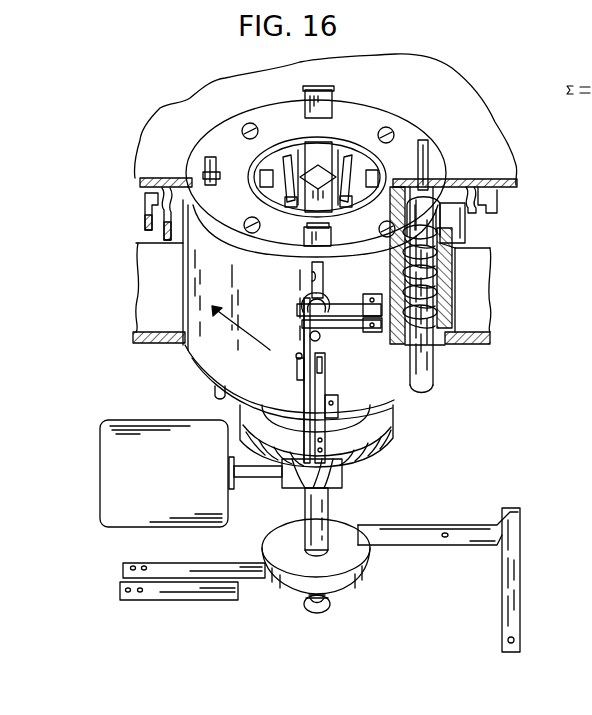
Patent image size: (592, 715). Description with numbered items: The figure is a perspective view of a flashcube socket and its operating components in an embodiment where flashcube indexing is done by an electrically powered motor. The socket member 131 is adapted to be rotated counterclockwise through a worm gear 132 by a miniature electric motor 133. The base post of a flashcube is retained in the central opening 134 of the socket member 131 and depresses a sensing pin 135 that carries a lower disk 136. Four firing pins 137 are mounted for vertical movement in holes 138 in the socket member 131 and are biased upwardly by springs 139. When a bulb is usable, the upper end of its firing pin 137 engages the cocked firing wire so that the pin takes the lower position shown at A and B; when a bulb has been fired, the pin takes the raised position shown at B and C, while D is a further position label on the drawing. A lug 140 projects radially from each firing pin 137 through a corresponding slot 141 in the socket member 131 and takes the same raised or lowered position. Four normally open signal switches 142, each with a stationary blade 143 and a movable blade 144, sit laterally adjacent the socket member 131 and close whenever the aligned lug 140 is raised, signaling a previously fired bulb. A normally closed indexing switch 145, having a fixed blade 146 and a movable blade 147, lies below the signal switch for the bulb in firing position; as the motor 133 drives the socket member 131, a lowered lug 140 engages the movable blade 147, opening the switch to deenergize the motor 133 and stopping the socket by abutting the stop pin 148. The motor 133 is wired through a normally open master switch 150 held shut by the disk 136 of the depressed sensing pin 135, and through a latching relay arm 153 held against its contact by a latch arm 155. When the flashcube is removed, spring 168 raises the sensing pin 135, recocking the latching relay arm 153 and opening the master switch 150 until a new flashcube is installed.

The central opening 134 is at (348, 140).
The socket member 131 is at (203, 347).
The raised firing pin position C is at (332, 94).
The lowered firing pin position A is at (331, 238).
The firing pin position B is at (216, 164).
The pin D is at (426, 157).
The firing pin 137 is at (432, 361).
The spring 139 is at (447, 270).
The hole 138 is at (448, 302).
The lug 140 is at (458, 216).
The slot 141 is at (450, 238).
The movable blade 144 is at (172, 178).
The stationary blade 143 is at (147, 199).
The signal switch 142 is at (143, 209).
The movable blade 147 is at (304, 344).
The stop pin 148 is at (297, 369).
The fixed blade 146 is at (327, 366).
The indexing switch 145 is at (303, 391).
The worm gear 132 is at (343, 474).
The sensing pin 135 is at (322, 513).
The lower disk 136 is at (347, 583).
The spring 168 is at (308, 612).
The miniature electric motor 133 is at (131, 421).
The latching relay arm 153 is at (458, 534).
The latch arm 155 is at (508, 587).
The master switch 150 is at (167, 601).